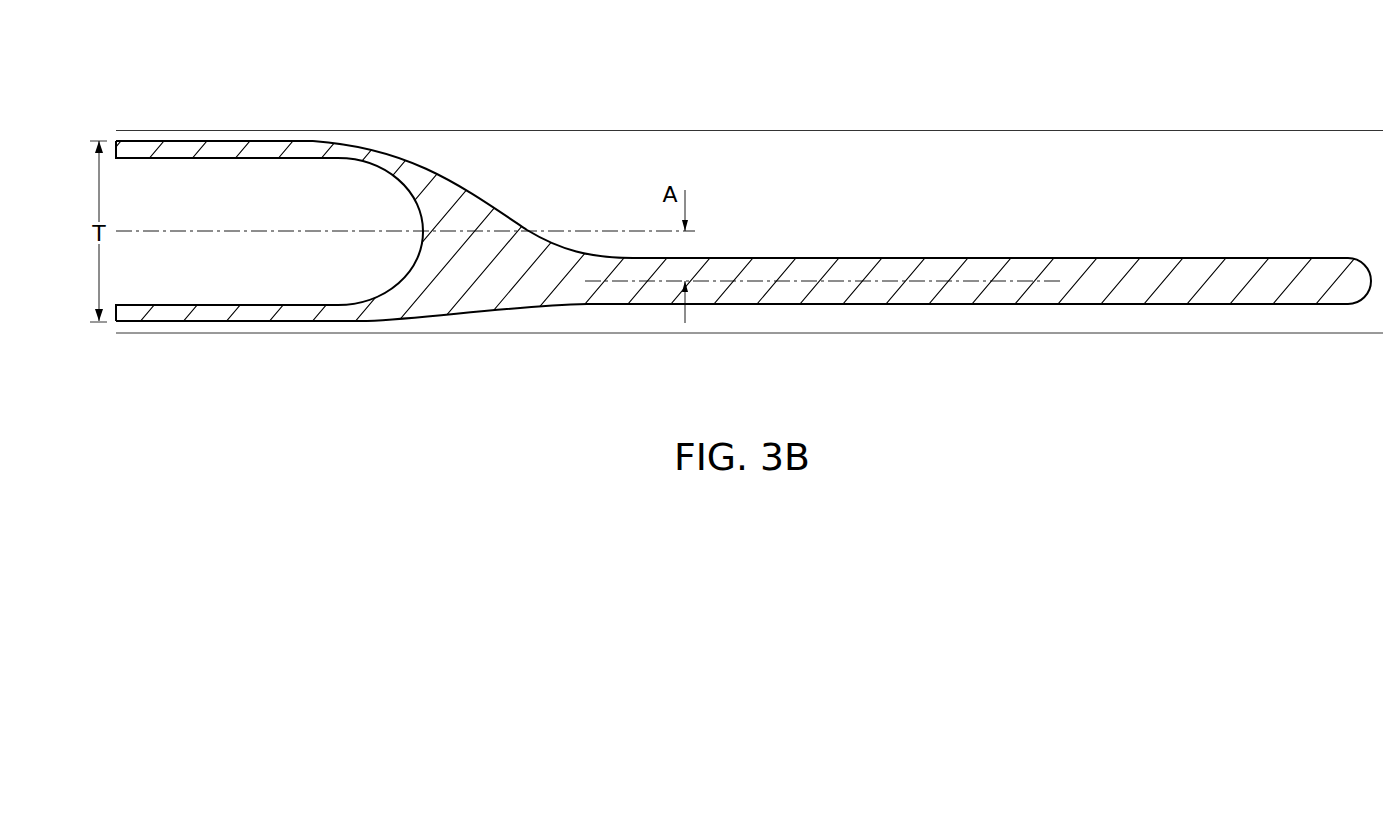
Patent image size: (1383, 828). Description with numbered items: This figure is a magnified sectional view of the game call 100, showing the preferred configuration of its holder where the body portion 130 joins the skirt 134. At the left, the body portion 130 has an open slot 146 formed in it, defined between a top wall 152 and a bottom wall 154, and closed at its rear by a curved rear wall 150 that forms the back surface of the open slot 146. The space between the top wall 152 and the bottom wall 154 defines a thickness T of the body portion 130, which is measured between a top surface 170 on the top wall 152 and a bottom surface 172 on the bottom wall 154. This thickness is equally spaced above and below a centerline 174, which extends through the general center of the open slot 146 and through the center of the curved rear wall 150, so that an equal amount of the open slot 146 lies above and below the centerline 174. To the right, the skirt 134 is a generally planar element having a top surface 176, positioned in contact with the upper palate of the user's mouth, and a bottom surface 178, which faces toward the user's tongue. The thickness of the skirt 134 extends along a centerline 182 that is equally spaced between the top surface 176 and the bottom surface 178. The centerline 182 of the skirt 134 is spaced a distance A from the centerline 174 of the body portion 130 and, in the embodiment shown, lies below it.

The game call 100 is at (584, 116).
The body portion 130 is at (171, 139).
The skirt 134 is at (1193, 277).
The open slot 146 is at (222, 193).
The curved rear wall 150 is at (420, 205).
The top wall 152 is at (292, 148).
The bottom wall 154 is at (302, 313).
The top surface 170 is at (130, 140).
The bottom surface 172 is at (162, 323).
The centerline 174 is at (557, 230).
The top surface 176 is at (989, 254).
The bottom surface 178 is at (1080, 305).
The centerline 182 is at (845, 279).